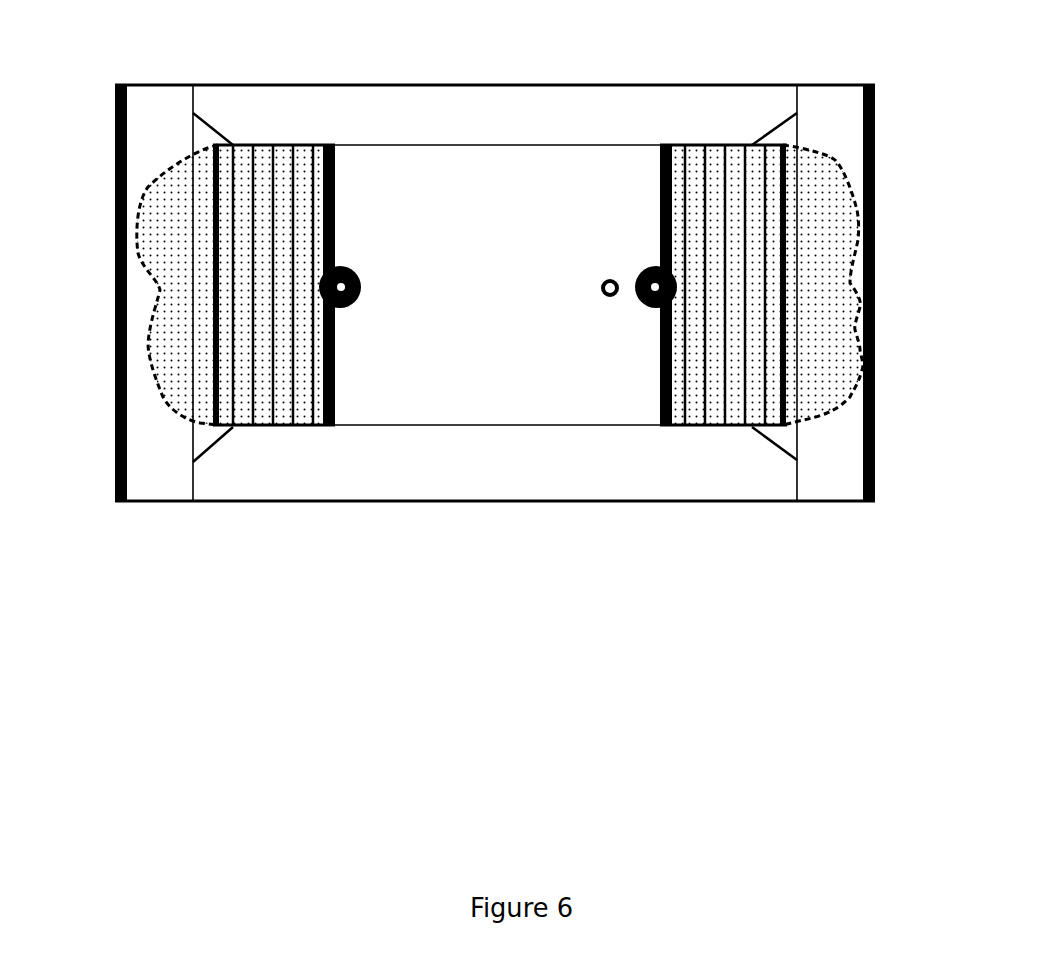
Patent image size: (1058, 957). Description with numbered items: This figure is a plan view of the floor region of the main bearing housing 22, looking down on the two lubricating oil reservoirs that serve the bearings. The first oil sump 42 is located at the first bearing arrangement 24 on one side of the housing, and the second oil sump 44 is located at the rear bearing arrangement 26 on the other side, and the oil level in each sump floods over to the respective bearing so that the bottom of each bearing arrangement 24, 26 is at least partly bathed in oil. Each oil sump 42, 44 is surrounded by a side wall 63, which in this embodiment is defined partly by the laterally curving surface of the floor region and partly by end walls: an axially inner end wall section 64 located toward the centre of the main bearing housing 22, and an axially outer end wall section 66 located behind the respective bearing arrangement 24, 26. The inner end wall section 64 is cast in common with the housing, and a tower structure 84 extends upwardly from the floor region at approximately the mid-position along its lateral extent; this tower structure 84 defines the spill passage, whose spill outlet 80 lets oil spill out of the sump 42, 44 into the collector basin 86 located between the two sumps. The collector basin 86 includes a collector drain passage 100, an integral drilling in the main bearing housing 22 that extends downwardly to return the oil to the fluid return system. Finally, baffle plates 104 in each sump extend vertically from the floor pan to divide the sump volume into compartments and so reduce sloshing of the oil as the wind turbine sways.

The main bearing housing 22 is at (705, 88).
The first bearing arrangement 24 is at (157, 95).
The rear bearing arrangement 26 is at (838, 92).
The first oil sump 42 is at (258, 450).
The second oil sump 44 is at (708, 448).
The side wall 63 is at (258, 142).
The axially inner end wall section 64 is at (341, 183).
The axially outer end wall section 66 is at (112, 107).
The spill outlet 80 is at (348, 266).
The tower structure 84 is at (344, 311).
The collector basin 86 is at (505, 302).
The collector drain passage 100 is at (602, 296).
The baffle plates 104 is at (292, 397).